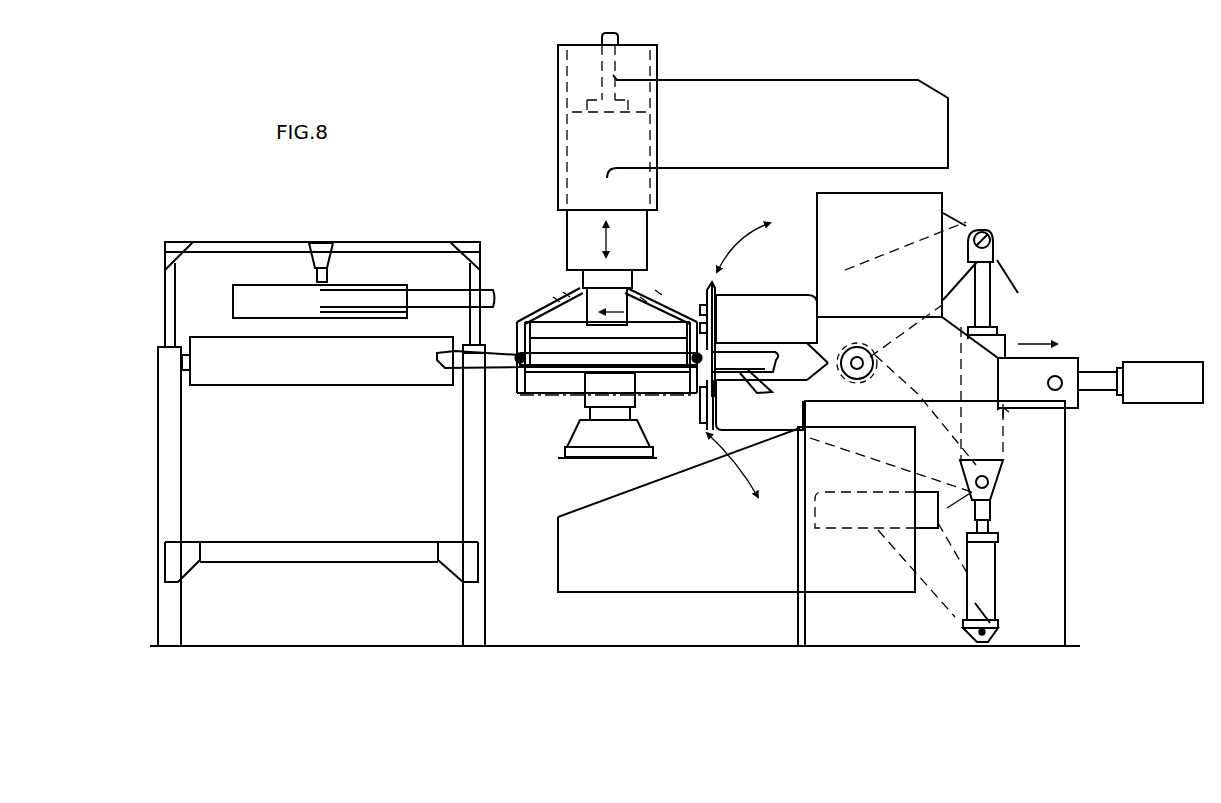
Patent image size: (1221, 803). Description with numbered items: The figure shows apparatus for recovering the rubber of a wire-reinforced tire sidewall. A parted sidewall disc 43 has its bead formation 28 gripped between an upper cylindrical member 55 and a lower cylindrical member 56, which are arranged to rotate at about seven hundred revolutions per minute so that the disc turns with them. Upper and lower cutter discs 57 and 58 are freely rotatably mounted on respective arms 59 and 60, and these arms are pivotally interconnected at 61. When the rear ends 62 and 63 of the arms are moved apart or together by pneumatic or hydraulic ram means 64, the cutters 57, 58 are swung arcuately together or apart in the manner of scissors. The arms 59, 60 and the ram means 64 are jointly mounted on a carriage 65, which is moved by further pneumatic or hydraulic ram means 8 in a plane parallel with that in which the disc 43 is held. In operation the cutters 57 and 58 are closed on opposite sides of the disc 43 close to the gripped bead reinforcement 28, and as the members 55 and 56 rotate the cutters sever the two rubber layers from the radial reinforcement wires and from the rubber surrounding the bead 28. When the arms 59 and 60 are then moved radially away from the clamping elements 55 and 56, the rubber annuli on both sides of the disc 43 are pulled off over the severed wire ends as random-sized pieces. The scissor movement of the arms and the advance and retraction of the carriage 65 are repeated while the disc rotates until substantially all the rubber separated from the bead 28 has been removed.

The ram means 8 is at (1160, 377).
The bead formation 28 is at (526, 358).
The sidewall disc 43 is at (497, 368).
The upper cylindrical member 55 is at (546, 305).
The lower cylindrical member 56 is at (522, 395).
The upper cutter disc 57 is at (718, 290).
The lower cutter disc 58 is at (713, 437).
The upper arm 59 is at (760, 303).
The lower arm 60 is at (773, 420).
The pivotal interconnection 61 is at (872, 357).
The rear end of upper arm 62 is at (997, 233).
The rear end of lower arm 63 is at (1000, 482).
The ram means 64 is at (1003, 415).
The carriage 65 is at (950, 333).